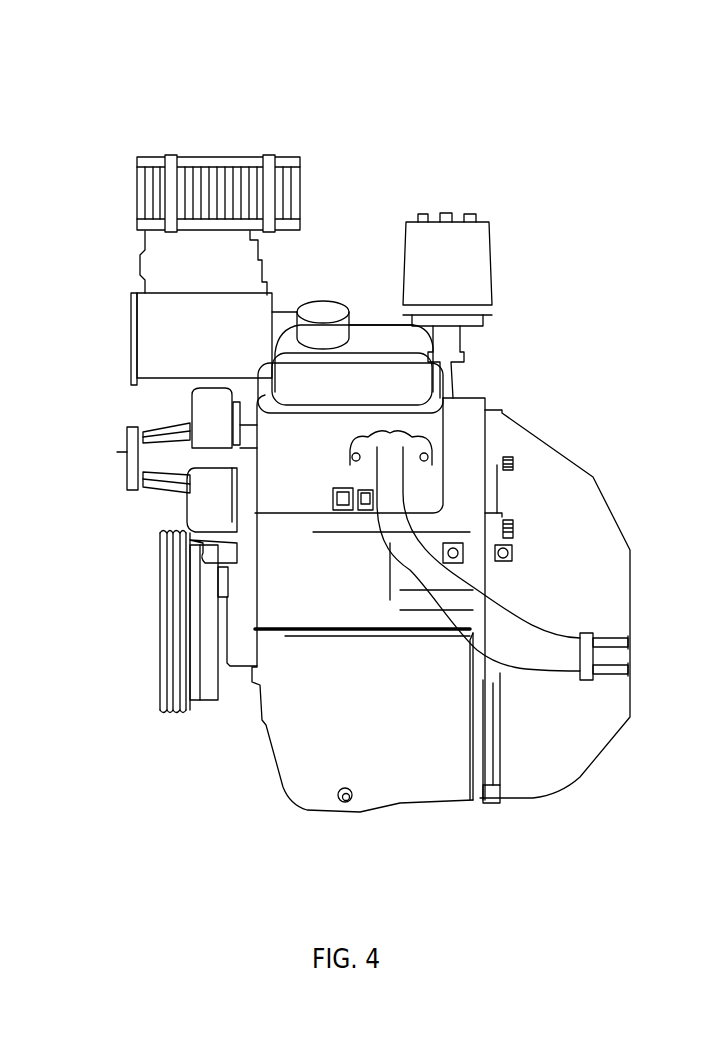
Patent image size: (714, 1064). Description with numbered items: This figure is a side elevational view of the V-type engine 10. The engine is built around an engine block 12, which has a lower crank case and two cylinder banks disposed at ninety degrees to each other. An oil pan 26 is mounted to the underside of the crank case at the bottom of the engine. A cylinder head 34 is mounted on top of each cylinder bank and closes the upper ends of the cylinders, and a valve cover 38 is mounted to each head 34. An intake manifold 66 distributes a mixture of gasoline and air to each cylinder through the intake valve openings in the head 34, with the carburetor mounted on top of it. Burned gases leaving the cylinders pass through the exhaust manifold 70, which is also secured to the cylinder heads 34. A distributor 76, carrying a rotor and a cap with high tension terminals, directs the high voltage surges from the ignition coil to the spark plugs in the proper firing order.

The V-type engine 10 is at (468, 113).
The engine block 12 is at (277, 575).
The oil pan 26 is at (322, 787).
The cylinder head 34 is at (290, 473).
The valve cover 38 is at (383, 367).
The intake manifold 66 is at (185, 340).
The exhaust manifold 70 is at (543, 657).
The distributor 76 is at (453, 280).